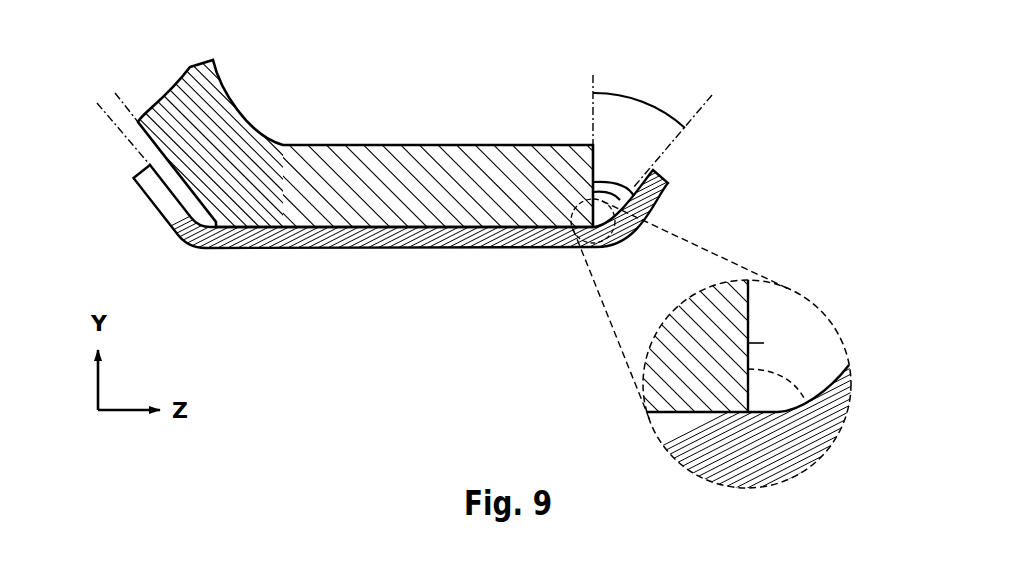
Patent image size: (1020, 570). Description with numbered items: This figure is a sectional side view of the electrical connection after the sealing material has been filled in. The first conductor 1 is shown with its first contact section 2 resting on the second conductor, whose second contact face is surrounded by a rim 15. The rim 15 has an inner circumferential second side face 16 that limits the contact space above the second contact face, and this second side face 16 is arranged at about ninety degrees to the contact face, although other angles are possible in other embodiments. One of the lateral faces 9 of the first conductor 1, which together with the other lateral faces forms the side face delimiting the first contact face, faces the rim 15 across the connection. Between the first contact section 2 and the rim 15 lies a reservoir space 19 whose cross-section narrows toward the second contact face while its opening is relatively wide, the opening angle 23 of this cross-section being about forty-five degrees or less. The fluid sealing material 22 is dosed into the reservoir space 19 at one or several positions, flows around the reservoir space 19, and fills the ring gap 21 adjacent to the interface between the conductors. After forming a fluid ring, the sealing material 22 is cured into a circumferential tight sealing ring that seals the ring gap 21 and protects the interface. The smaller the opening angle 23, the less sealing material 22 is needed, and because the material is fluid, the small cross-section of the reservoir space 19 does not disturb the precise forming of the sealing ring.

The first conductor 1 is at (296, 58).
The first contact section 2 is at (405, 163).
The lateral face 9 is at (754, 343).
The rim 15 is at (143, 186).
The second side face 16 is at (819, 385).
The reservoir space 19 is at (634, 174).
The ring gap 21 is at (220, 215).
The sealing material 22 is at (611, 193).
The opening angle 23 is at (671, 111).